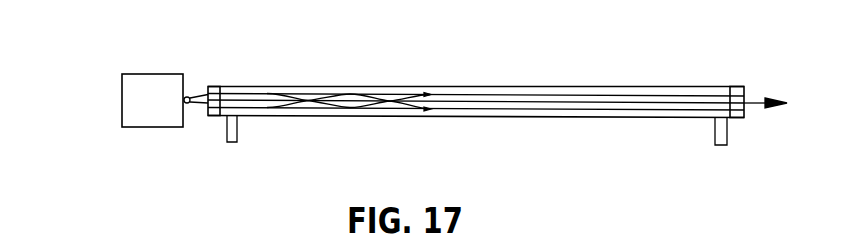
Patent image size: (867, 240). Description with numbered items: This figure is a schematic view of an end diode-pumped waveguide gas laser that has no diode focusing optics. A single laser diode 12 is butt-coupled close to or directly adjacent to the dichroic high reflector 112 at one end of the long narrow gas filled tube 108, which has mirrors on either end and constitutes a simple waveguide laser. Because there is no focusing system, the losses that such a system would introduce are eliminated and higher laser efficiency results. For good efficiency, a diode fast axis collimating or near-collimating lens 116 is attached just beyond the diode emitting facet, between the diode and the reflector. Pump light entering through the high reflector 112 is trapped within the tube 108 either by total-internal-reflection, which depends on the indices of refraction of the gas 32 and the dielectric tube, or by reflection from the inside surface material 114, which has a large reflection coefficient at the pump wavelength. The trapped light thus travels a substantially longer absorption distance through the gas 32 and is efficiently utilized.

The laser diode 12 is at (122, 87).
The diode fast axis collimating lens 116 is at (188, 96).
The gas filled tube 108 is at (528, 87).
The dichroic high reflector 112 is at (213, 122).
The inside surface material 114 is at (518, 109).
The gas 32 is at (452, 87).